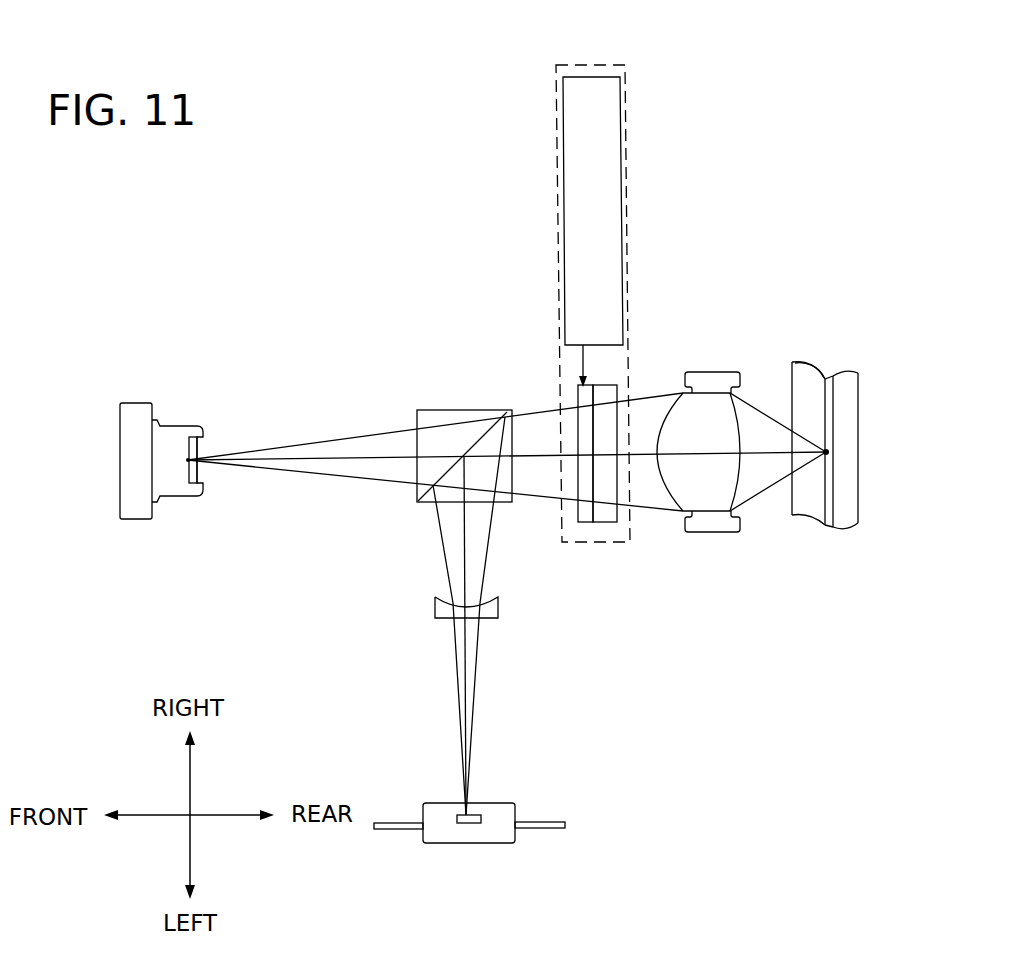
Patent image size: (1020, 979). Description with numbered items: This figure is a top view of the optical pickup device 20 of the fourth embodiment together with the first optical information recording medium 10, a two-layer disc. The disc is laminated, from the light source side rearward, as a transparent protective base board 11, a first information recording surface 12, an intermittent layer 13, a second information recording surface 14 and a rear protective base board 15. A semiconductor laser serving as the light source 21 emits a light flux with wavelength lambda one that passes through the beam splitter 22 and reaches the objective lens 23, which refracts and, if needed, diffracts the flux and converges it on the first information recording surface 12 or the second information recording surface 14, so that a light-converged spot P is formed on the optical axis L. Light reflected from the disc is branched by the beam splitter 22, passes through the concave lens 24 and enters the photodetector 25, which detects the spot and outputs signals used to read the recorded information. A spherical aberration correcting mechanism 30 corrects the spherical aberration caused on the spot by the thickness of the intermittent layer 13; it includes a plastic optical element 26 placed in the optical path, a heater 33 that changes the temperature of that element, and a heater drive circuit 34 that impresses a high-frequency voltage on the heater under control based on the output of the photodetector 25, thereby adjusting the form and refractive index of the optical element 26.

The first optical information recording medium 10 is at (848, 427).
The transparent protective base board 11 is at (813, 503).
The first information recording surface 12 is at (813, 374).
The intermittent layer 13 is at (830, 378).
The second information recording surface 14 is at (836, 399).
The protective base board 15 is at (840, 491).
The optical pickup device 20 is at (473, 607).
The light source 21 is at (173, 432).
The beam splitter 22 is at (472, 413).
The objective lens 23 is at (709, 372).
The concave lens 24 is at (500, 604).
The photodetector 25 is at (497, 833).
The optical element 26 is at (607, 517).
The spherical aberration correcting mechanism 30 is at (599, 295).
The heater 33 is at (583, 398).
The heater drive circuit 34 is at (622, 195).
The optical axis L is at (313, 455).
The light-converged spot P is at (838, 452).